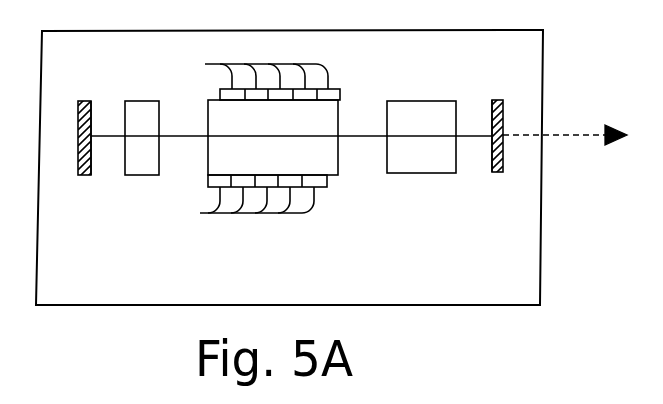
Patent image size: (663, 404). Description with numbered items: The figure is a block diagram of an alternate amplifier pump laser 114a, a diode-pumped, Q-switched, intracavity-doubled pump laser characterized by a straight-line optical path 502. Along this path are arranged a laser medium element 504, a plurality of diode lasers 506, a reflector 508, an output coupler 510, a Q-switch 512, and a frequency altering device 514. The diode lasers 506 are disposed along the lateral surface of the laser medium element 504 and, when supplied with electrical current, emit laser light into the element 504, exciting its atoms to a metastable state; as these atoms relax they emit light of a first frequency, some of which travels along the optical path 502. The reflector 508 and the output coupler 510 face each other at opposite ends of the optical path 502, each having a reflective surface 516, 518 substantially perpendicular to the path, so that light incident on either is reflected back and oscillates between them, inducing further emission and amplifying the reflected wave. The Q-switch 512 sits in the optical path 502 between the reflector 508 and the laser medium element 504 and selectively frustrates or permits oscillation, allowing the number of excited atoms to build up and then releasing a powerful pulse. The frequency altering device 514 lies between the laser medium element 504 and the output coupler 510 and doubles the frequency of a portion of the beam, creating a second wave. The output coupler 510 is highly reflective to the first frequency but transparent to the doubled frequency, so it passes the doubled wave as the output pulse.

The alternate amplifier pump laser 114a is at (443, 305).
The optical path 502 is at (363, 133).
The laser medium element 504 is at (338, 148).
The diode lasers 506 is at (220, 64).
The reflector 508 is at (86, 101).
The output coupler 510 is at (500, 100).
The Q-switch 512 is at (126, 175).
The frequency altering device 514 is at (413, 158).
The reflective surface 516 is at (91, 125).
The reflective surface 518 is at (492, 160).